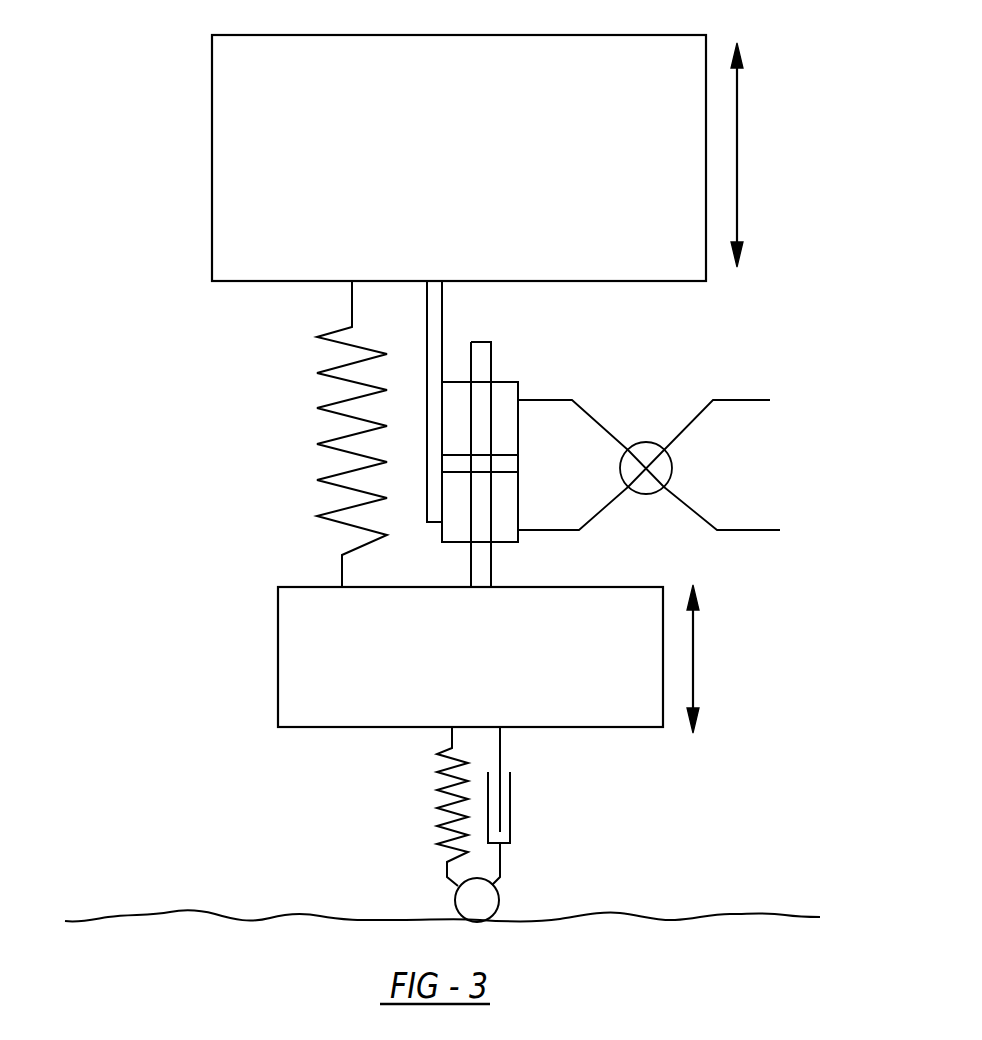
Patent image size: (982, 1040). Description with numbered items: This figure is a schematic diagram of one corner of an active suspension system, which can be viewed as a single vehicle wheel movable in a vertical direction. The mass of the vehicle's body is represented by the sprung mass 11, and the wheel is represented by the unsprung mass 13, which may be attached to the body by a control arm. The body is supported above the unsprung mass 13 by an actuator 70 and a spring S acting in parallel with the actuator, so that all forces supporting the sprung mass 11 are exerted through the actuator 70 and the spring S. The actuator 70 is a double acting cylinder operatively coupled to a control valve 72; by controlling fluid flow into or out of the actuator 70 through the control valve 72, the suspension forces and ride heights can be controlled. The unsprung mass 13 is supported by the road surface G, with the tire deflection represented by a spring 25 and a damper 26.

The sprung mass 11 is at (212, 148).
The unsprung mass 13 is at (278, 650).
The spring S is at (337, 343).
The actuator 70 is at (503, 381).
The control valve 72 is at (646, 442).
The spring 25 is at (435, 770).
The damper 26 is at (512, 808).
The road surface G is at (108, 917).